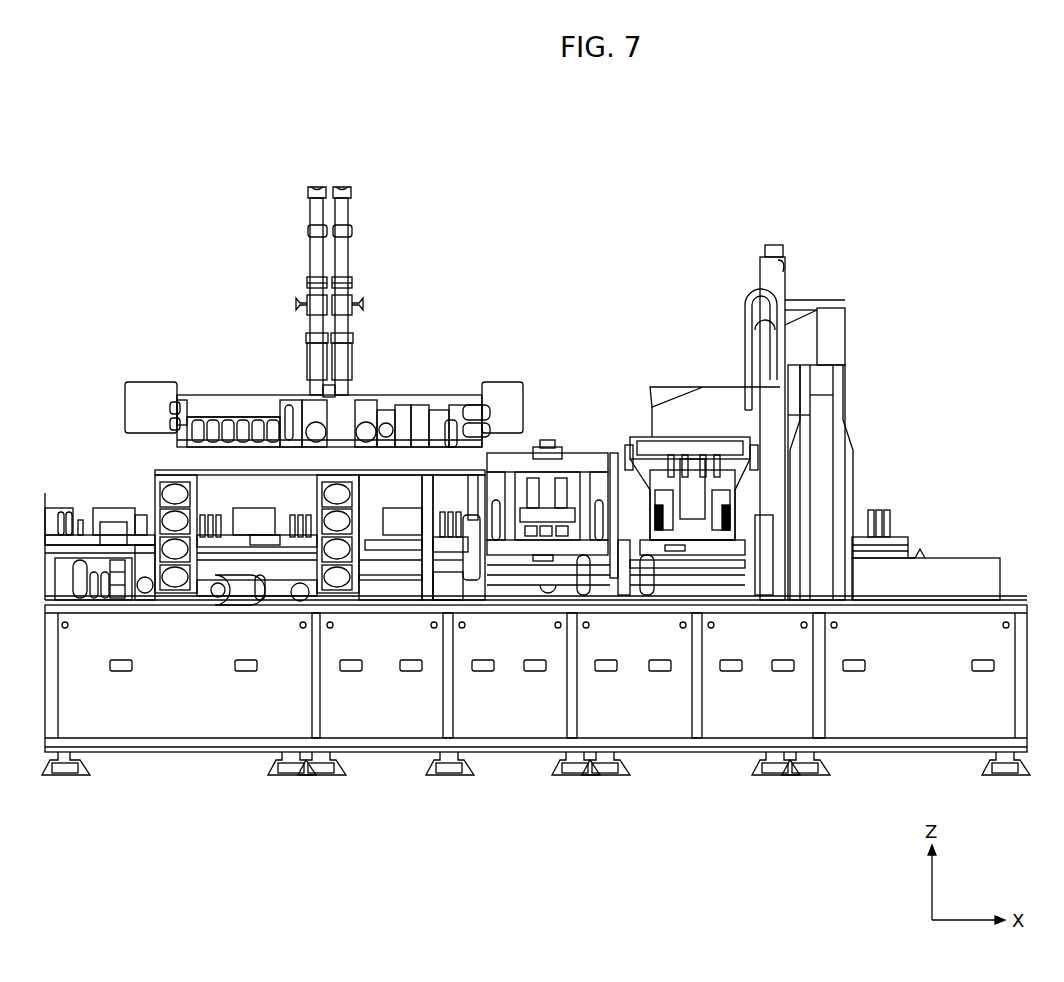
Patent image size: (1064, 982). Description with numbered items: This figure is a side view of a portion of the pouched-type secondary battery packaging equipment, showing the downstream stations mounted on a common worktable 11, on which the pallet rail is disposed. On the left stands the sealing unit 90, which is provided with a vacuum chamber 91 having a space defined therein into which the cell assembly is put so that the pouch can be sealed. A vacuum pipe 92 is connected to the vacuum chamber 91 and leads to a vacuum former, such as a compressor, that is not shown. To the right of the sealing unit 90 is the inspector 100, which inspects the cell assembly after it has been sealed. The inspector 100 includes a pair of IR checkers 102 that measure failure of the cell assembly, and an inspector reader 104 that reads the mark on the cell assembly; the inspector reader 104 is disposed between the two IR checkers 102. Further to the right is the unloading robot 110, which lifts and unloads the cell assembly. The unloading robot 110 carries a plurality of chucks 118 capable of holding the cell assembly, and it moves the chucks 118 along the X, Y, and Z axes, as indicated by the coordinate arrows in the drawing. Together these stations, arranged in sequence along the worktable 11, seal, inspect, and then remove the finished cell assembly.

The worktable 11 is at (511, 705).
The sealing unit 90 is at (243, 218).
The vacuum chamber 91 is at (234, 395).
The vacuum pipe 92 is at (310, 255).
The inspector 100 is at (623, 325).
The IR checker 102 is at (493, 502).
The inspector reader 104 is at (528, 502).
The unloading robot 110 is at (833, 273).
The chuck 118 is at (657, 437).